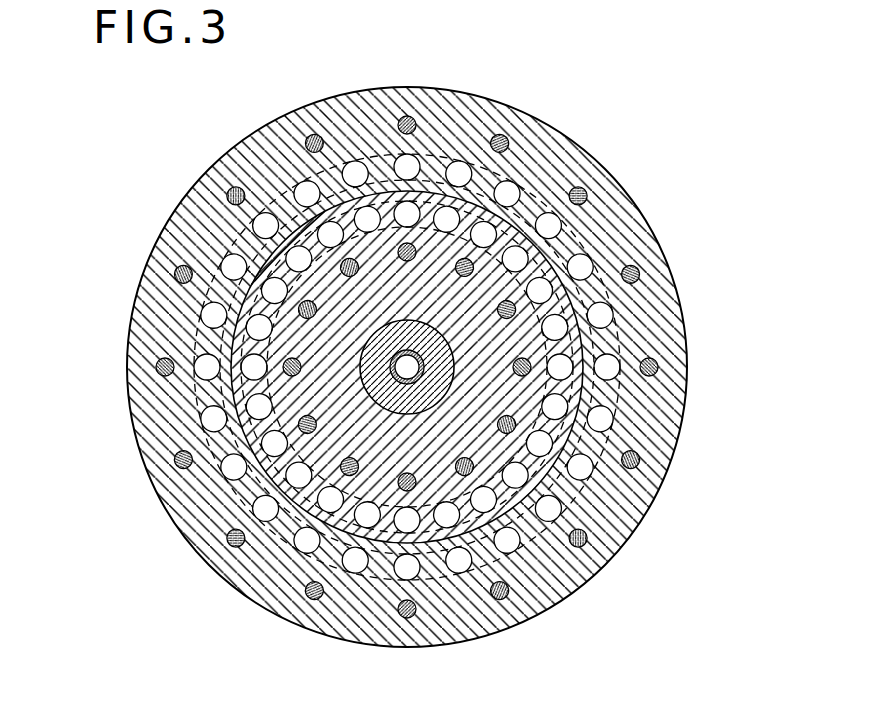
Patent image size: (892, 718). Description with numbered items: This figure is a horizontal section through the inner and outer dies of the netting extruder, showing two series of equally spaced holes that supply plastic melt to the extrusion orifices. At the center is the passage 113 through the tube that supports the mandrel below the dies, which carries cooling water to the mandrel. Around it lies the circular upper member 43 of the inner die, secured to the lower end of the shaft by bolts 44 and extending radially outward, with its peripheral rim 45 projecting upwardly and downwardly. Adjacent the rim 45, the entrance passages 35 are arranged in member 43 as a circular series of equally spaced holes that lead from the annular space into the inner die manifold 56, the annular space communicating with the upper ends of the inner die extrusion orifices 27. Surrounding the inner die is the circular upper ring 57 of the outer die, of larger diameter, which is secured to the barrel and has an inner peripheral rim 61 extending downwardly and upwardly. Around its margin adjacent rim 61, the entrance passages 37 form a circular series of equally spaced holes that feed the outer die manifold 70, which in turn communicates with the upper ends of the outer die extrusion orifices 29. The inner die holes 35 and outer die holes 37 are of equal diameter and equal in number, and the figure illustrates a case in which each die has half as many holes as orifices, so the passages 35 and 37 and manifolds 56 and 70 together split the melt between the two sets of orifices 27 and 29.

The extrusion orifices of the inner die 27 is at (262, 293).
The outer die extrusion orifices 29 is at (400, 158).
The entrance passages 35 is at (562, 358).
The entrance passages 37 is at (607, 416).
The circular upper member 43 is at (387, 460).
The bolts 44 is at (526, 515).
The peripheral rim 45 is at (272, 250).
The inner die manifold 56 is at (578, 220).
The circular upper ring 57 is at (177, 327).
The inner peripheral rim 61 is at (284, 210).
The outer die manifold 70 is at (444, 156).
The passage 113 is at (407, 367).